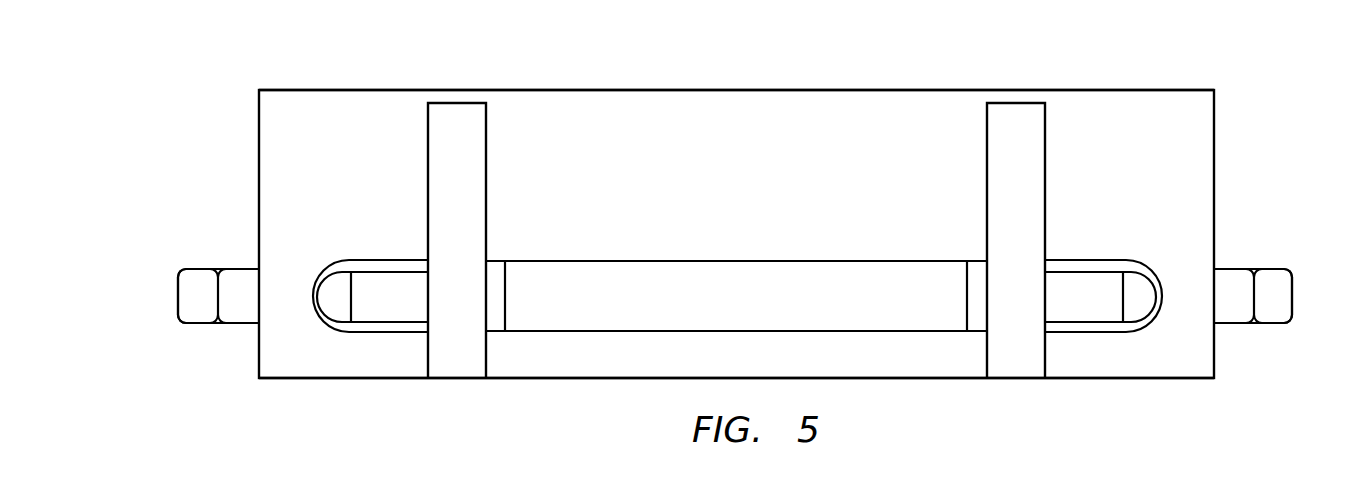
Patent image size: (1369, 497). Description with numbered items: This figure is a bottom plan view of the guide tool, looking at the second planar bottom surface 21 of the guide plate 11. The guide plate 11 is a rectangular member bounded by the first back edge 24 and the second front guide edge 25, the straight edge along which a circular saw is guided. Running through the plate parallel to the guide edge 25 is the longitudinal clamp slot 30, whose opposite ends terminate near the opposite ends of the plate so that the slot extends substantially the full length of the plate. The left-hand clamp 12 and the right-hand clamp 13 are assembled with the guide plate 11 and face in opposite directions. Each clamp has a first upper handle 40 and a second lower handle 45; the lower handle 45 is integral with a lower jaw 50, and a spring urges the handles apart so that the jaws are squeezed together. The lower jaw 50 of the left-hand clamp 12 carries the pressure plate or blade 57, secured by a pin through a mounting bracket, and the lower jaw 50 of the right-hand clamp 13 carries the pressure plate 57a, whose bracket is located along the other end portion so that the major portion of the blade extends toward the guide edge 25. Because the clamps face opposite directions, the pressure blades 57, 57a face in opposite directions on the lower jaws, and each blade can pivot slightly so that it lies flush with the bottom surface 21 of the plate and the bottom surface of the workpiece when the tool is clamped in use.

The guide plate 11 is at (960, 88).
The second planar bottom surface 21 is at (838, 113).
The second front guide edge 25 is at (548, 88).
The first back edge 24 is at (927, 380).
The pressure plate or blade 57 is at (457, 367).
The pressure plate 57a is at (1013, 363).
The longitudinal clamp slot 30 is at (573, 330).
The lower jaw 50 is at (366, 317).
The left-hand clamp 12 is at (231, 325).
The right-hand clamp 13 is at (1233, 323).
The first upper handle 40 is at (243, 283).
The second lower handle 45 is at (188, 285).